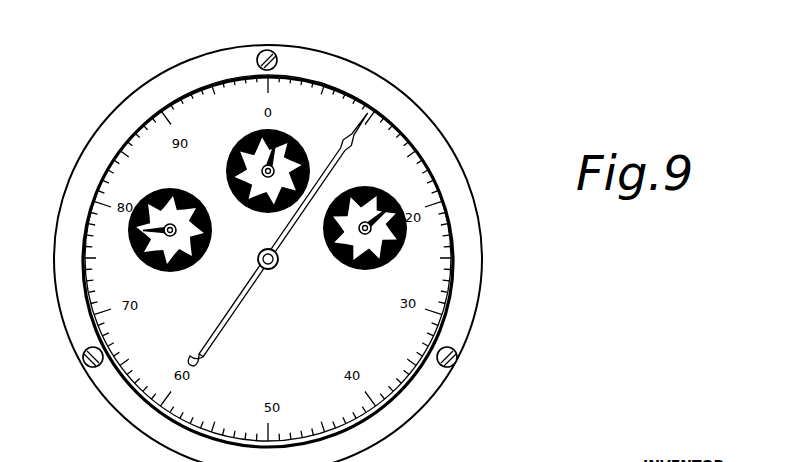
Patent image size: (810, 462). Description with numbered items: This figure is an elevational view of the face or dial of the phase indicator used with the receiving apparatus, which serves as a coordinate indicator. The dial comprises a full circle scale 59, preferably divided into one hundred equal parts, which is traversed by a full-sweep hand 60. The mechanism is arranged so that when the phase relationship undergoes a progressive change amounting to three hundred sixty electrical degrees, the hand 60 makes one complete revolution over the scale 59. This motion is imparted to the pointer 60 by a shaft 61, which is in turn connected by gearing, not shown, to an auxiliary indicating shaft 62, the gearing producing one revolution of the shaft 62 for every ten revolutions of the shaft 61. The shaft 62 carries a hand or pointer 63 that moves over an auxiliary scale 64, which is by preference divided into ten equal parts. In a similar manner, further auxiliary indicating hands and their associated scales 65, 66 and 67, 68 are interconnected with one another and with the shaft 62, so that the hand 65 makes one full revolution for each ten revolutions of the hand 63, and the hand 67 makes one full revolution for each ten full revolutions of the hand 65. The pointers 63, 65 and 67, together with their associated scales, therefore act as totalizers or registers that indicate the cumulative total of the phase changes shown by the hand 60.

The full circle scale 59 is at (284, 76).
The full-sweep hand 60 is at (358, 140).
The shaft 61 is at (268, 249).
The auxiliary indicating shaft 62 is at (171, 235).
The hand or pointer 63 is at (165, 228).
The auxiliary scale 64 is at (179, 234).
The auxiliary indicating hand 65 is at (268, 171).
The auxiliary scale 66 is at (267, 178).
The auxiliary indicating hand 67 is at (365, 228).
The auxiliary scale 68 is at (366, 234).